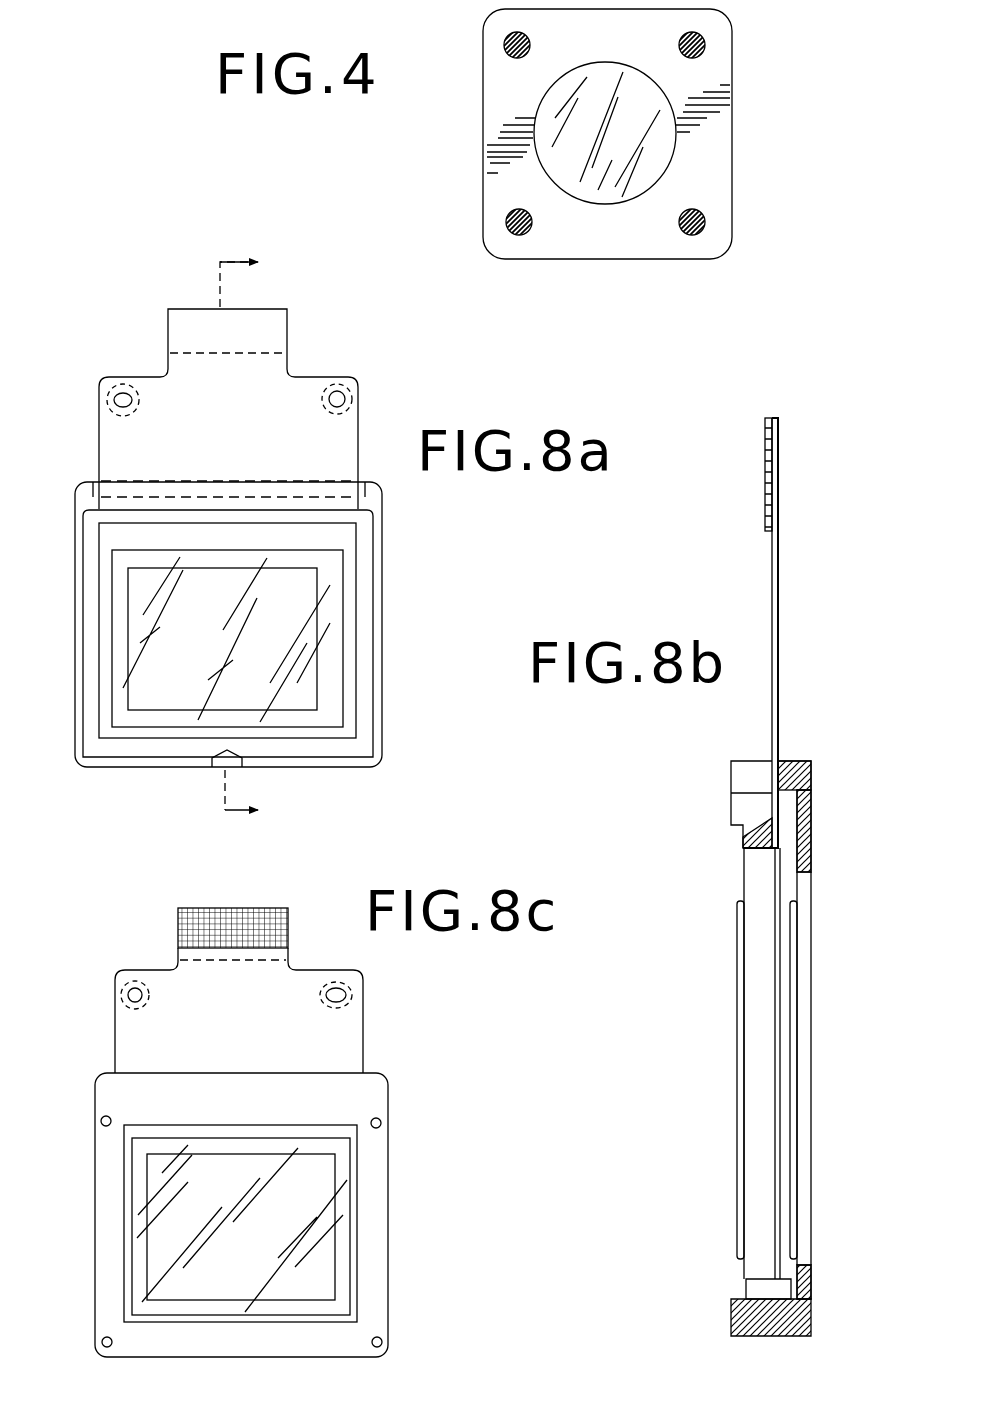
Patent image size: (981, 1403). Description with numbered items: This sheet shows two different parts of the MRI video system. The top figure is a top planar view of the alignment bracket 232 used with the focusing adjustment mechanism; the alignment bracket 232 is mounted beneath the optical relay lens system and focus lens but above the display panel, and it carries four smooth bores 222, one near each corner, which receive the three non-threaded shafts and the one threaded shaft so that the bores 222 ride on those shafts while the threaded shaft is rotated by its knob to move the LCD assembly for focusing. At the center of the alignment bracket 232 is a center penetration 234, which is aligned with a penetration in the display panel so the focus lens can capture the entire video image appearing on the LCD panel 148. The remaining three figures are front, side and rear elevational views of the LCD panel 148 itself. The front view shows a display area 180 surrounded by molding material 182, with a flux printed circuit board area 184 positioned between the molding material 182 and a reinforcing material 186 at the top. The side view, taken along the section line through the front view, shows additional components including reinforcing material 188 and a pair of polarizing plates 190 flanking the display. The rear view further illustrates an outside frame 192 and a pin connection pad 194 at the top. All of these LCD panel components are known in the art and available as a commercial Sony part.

In FIG. 8A, the LCD panel 148 is at (246, 540).
In FIG. 8B, the LCD panel 148 is at (734, 877).
In FIG. 8C, the LCD panel 148 is at (253, 1128).
In FIG. 8A, the display area 180 is at (300, 662).
In FIG. 8B, the display area 180 is at (778, 886).
In FIG. 8C, the display area 180 is at (323, 1210).
In FIG. 8A, the molding material 182 is at (362, 753).
In FIG. 8B, the molding material 182 is at (740, 1322).
In FIG. 8A, the flux printed circuit board (FPC) area 184 is at (118, 442).
In FIG. 8B, the flux printed circuit board (FPC) area 184 is at (772, 560).
In FIG. 8C, the flux printed circuit board (FPC) area 184 is at (133, 1027).
In FIG. 8A, the reinforcing material 186 is at (168, 335).
In FIG. 8B, the reinforcing material 188 is at (811, 772).
In FIG. 8B, the polarizing plates 190 is at (737, 1095).
In FIG. 8B, the outside frame 192 is at (731, 762).
In FIG. 8C, the outside frame 192 is at (110, 1100).
In FIG. 8B, the pin connection pad 194 is at (765, 452).
In FIG. 8C, the pin connection pad 194 is at (178, 925).
In FIG. 4, the smooth bore 222 is at (506, 50).
In FIG. 4, the alignment bracket 232 is at (483, 140).
In FIG. 4, the center penetration 234 is at (676, 150).